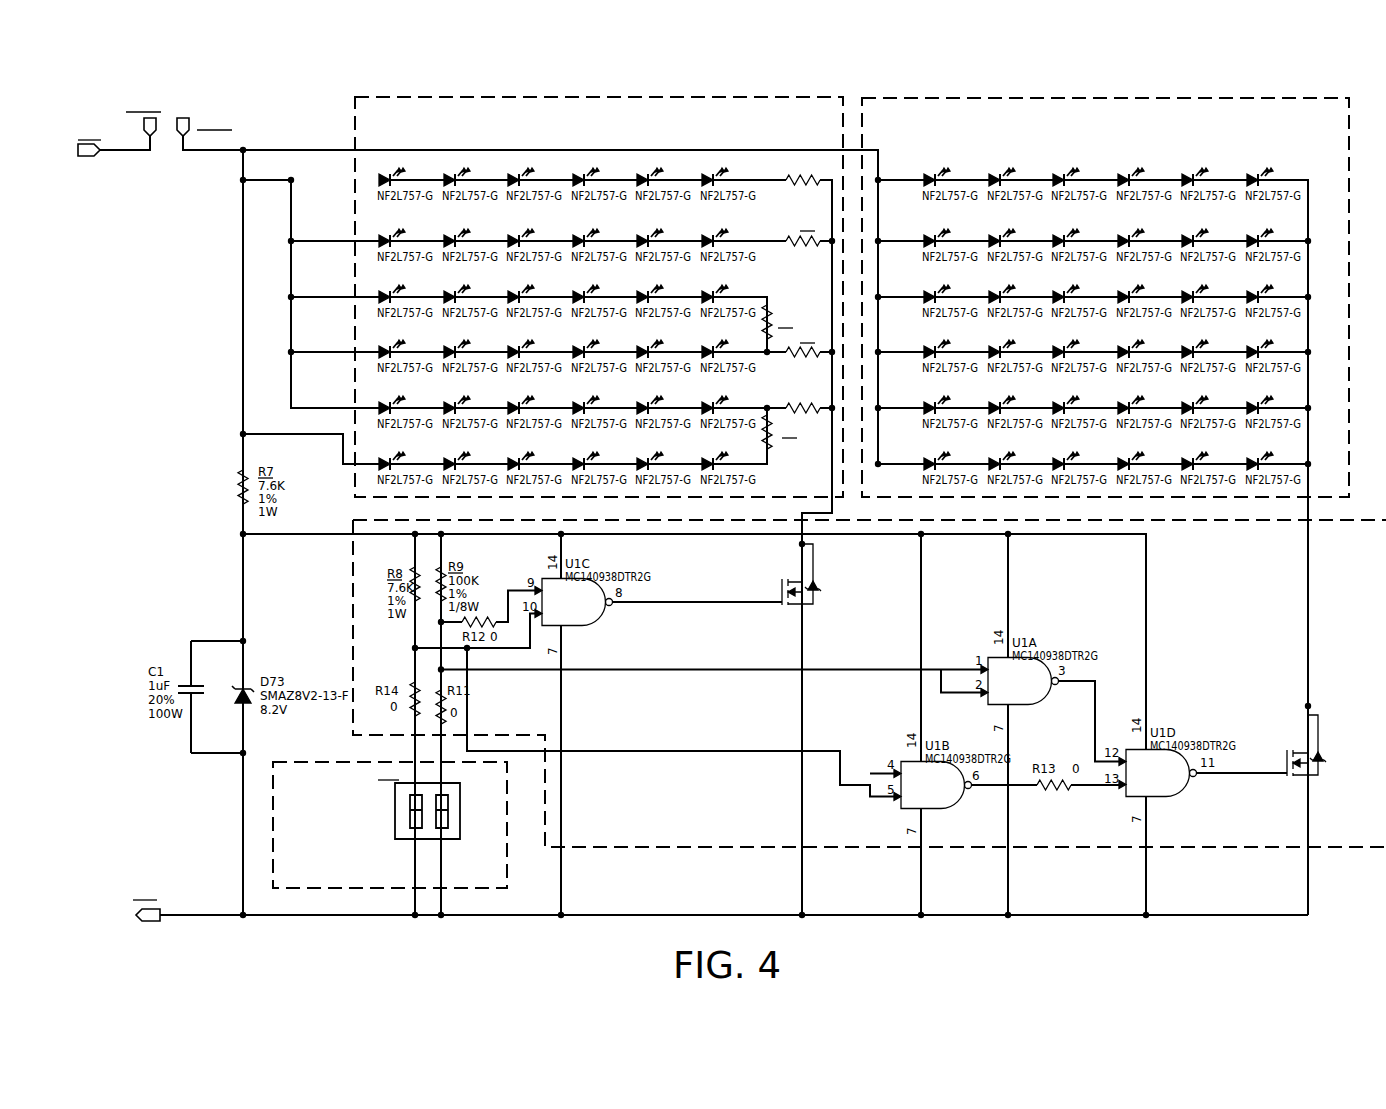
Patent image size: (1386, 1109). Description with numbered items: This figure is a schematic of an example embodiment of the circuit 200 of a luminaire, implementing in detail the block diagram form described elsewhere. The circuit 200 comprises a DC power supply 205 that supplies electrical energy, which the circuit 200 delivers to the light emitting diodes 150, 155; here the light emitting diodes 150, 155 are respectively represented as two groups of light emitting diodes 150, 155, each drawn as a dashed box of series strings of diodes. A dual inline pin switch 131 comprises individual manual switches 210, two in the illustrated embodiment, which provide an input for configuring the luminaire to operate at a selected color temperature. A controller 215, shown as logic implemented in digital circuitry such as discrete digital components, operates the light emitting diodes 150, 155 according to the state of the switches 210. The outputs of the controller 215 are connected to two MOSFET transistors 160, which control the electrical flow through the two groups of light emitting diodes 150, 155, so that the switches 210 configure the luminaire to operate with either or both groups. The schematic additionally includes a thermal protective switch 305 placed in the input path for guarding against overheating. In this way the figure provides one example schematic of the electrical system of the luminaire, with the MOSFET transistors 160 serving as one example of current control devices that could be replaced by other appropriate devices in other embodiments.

The thermal protective switch 305 is at (183, 89).
The DC power supply 205 is at (102, 195).
The light emitting diodes 150 is at (567, 134).
The light emitting diodes 155 is at (1132, 134).
The MOSFET transistors 160 is at (775, 617).
The controller 215 is at (762, 802).
The switches 210 is at (357, 829).
The dual inline pin switch 131 is at (452, 864).
The circuit 200 is at (958, 929).